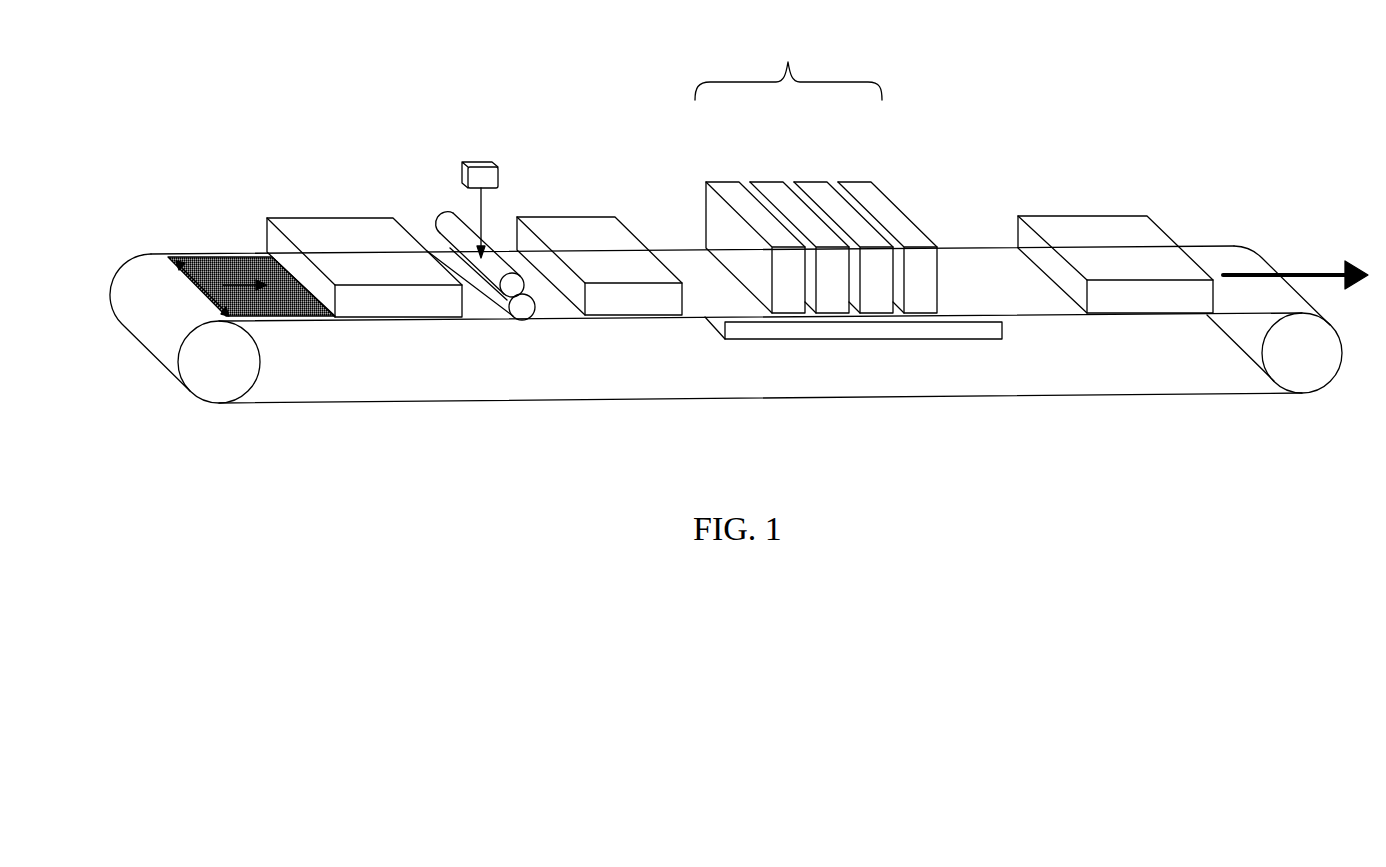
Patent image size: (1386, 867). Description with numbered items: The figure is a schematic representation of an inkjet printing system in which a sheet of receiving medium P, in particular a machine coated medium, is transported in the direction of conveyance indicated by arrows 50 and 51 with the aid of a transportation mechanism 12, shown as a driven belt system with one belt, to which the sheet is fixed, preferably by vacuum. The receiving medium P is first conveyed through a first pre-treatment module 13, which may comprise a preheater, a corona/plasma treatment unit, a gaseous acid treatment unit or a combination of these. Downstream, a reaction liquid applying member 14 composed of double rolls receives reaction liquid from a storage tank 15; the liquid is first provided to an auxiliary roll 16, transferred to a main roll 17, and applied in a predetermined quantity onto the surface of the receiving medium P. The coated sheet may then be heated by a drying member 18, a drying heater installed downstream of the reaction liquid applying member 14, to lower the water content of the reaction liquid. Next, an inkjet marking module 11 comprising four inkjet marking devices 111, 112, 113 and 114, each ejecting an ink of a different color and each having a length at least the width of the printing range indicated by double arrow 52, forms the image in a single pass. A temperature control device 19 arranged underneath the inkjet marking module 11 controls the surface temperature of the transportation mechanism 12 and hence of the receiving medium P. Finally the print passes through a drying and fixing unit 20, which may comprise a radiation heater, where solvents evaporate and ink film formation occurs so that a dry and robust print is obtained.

The inkjet marking module 11 is at (808, 44).
The inkjet marking device 111 is at (857, 182).
The inkjet marking device 112 is at (815, 182).
The inkjet marking device 113 is at (770, 182).
The inkjet marking device 114 is at (725, 182).
The transportation mechanism 12 is at (238, 378).
The first pre-treatment module 13 is at (338, 227).
The reaction liquid applying member 14 is at (490, 73).
The storage tank 15 is at (478, 161).
The auxiliary roll 16 is at (437, 230).
The main roll 17 is at (526, 320).
The drying member 18 is at (588, 224).
The temperature control device 19 is at (872, 340).
The drying and fixing unit 20 is at (1090, 224).
The arrow 50 is at (242, 283).
The arrow 51 is at (1263, 255).
The double arrow 52 is at (170, 312).
The receiving medium P is at (181, 257).